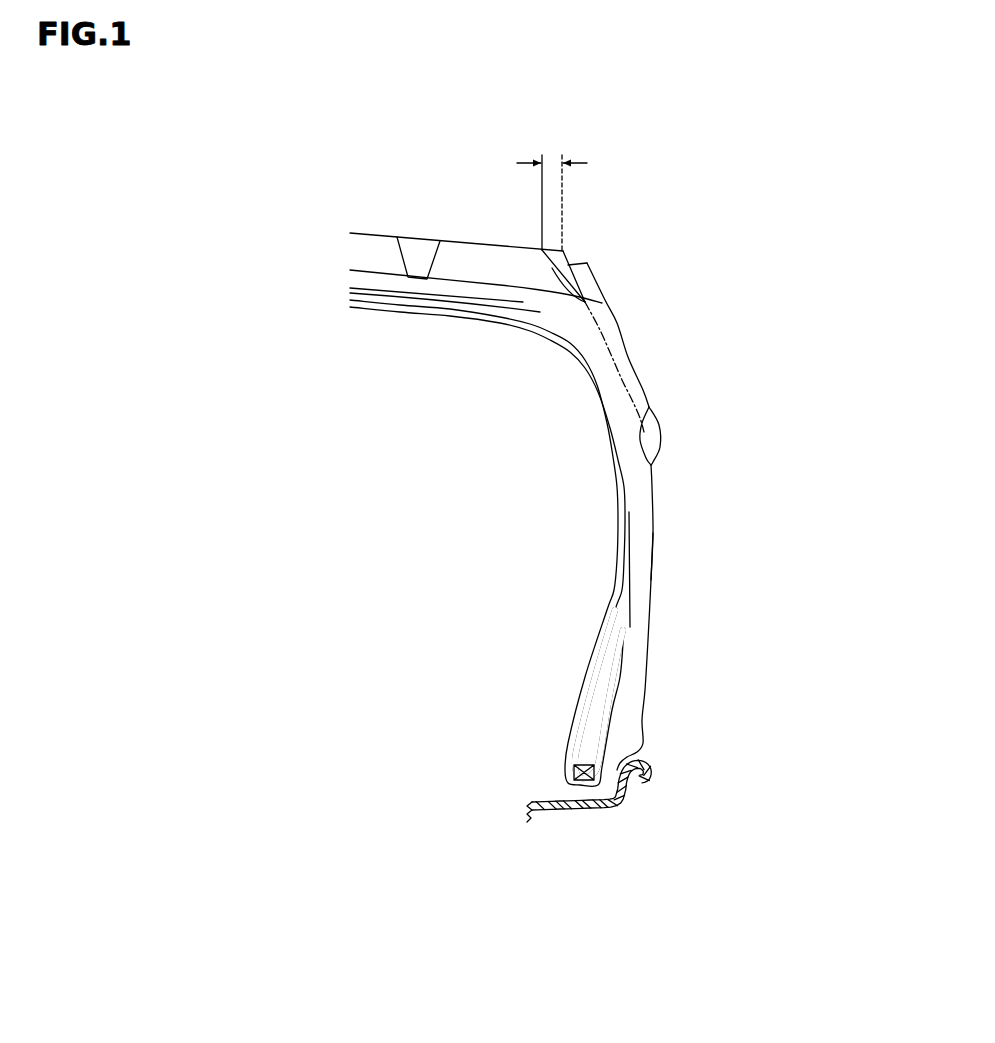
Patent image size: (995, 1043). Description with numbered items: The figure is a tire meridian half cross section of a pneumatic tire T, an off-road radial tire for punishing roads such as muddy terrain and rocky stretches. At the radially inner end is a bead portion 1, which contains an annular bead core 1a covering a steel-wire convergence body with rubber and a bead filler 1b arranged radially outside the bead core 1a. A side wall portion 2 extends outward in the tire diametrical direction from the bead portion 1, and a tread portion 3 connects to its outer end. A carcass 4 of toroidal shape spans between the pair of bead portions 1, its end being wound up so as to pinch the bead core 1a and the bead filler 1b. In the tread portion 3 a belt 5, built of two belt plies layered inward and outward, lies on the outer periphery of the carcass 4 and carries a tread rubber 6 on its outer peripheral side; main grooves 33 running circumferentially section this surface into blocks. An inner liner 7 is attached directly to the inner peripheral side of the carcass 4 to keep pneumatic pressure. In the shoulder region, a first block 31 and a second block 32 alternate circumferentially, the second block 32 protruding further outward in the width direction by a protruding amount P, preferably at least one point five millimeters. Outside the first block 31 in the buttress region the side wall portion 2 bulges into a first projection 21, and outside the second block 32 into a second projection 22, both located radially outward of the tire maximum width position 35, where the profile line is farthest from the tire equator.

The bead portion 1 is at (668, 745).
The bead core 1a is at (567, 777).
The bead filler 1b is at (595, 708).
The side wall portion 2 is at (700, 505).
The first projection 21 is at (659, 425).
The second projection 22 is at (596, 283).
The tread portion 3 is at (357, 218).
The first block 31 is at (497, 233).
The second block 32 is at (545, 249).
The main groove 33 is at (418, 245).
The tire maximum width position 35 is at (653, 533).
The carcass 4 is at (470, 315).
The belt 5 is at (378, 302).
The tread rubber 6 is at (350, 253).
The inner liner 7 is at (615, 599).
The protruding amount P is at (552, 192).
The pneumatic tire T is at (365, 660).